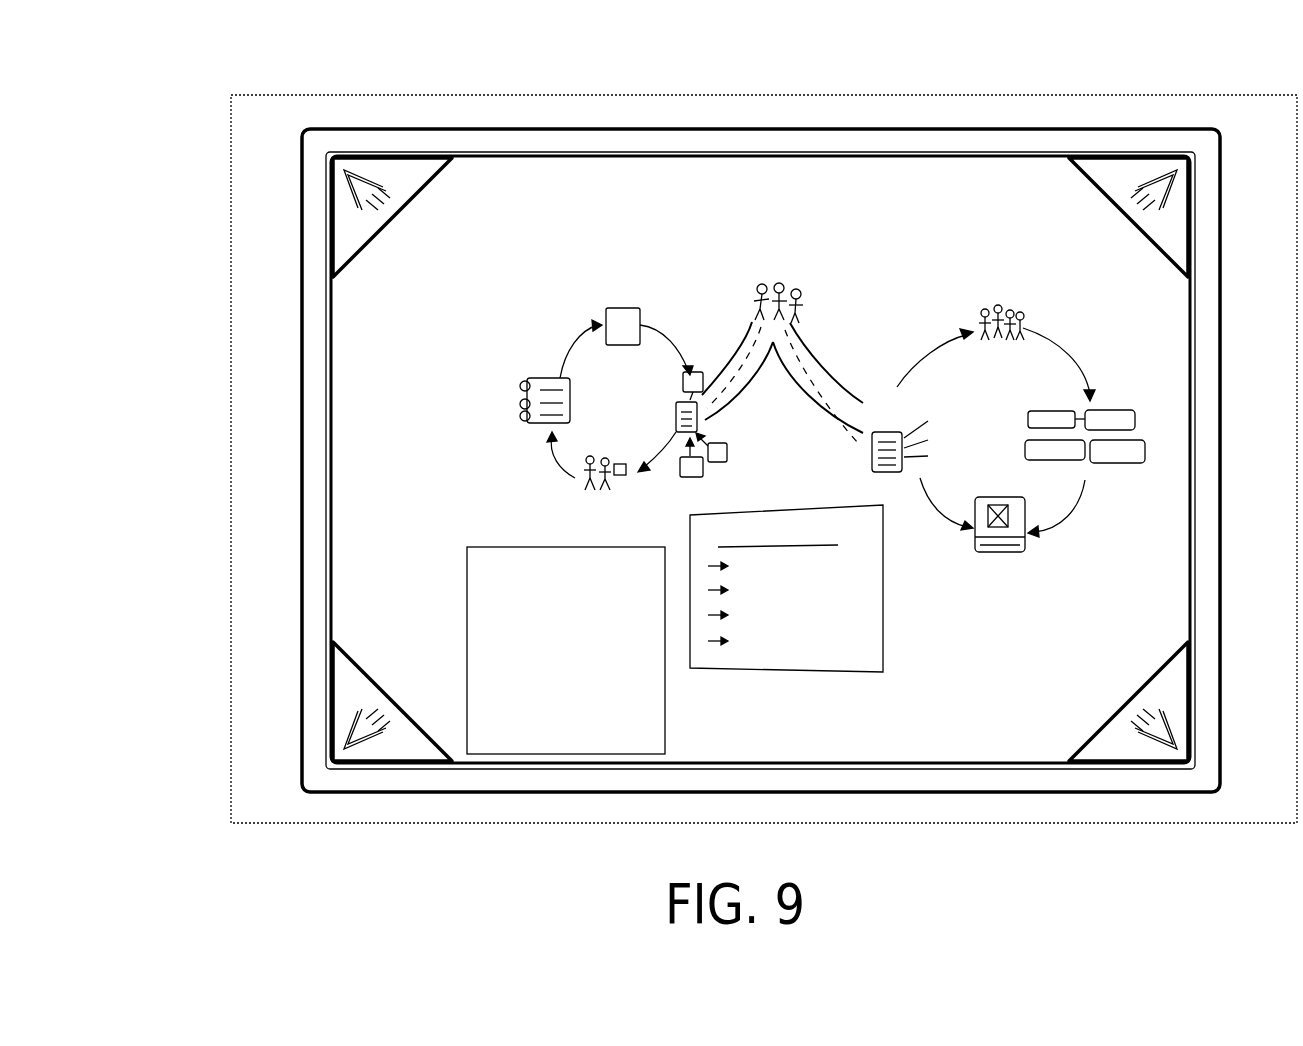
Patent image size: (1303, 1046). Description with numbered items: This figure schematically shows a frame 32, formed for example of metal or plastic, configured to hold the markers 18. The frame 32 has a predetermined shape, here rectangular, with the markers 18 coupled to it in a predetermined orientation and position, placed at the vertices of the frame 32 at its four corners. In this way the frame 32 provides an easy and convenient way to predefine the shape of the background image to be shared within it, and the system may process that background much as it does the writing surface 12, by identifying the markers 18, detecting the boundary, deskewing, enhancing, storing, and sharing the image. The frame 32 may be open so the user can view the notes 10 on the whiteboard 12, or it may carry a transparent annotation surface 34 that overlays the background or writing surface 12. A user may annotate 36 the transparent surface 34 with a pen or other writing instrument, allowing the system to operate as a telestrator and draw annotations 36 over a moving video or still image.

The notes 10 is at (496, 476).
The writing surface 12 is at (293, 293).
The markers 18 is at (328, 195).
The frame 32 is at (870, 127).
The transparent annotation surface 34 is at (444, 390).
The annotation 36 is at (497, 636).